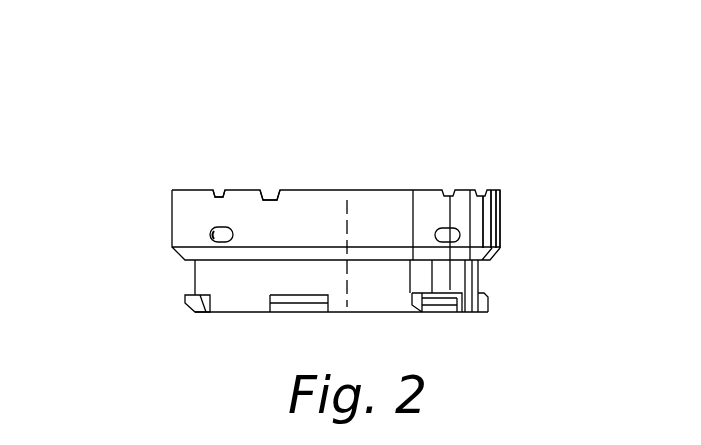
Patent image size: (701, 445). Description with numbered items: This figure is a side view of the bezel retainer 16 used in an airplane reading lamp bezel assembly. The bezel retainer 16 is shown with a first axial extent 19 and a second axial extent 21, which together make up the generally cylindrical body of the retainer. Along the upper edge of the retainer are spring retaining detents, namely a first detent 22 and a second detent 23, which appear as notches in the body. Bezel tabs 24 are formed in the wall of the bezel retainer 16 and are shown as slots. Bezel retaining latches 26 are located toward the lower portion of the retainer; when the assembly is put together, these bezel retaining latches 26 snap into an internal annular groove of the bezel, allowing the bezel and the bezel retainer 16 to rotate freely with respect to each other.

The bezel retainer 16 is at (327, 152).
The first axial extent 19 is at (483, 220).
The second axial extent 21 is at (210, 277).
The first detent 22 is at (221, 189).
The second detent 23 is at (277, 189).
The bezel tabs 24 is at (209, 230).
The bezel retaining latches 26 is at (453, 292).